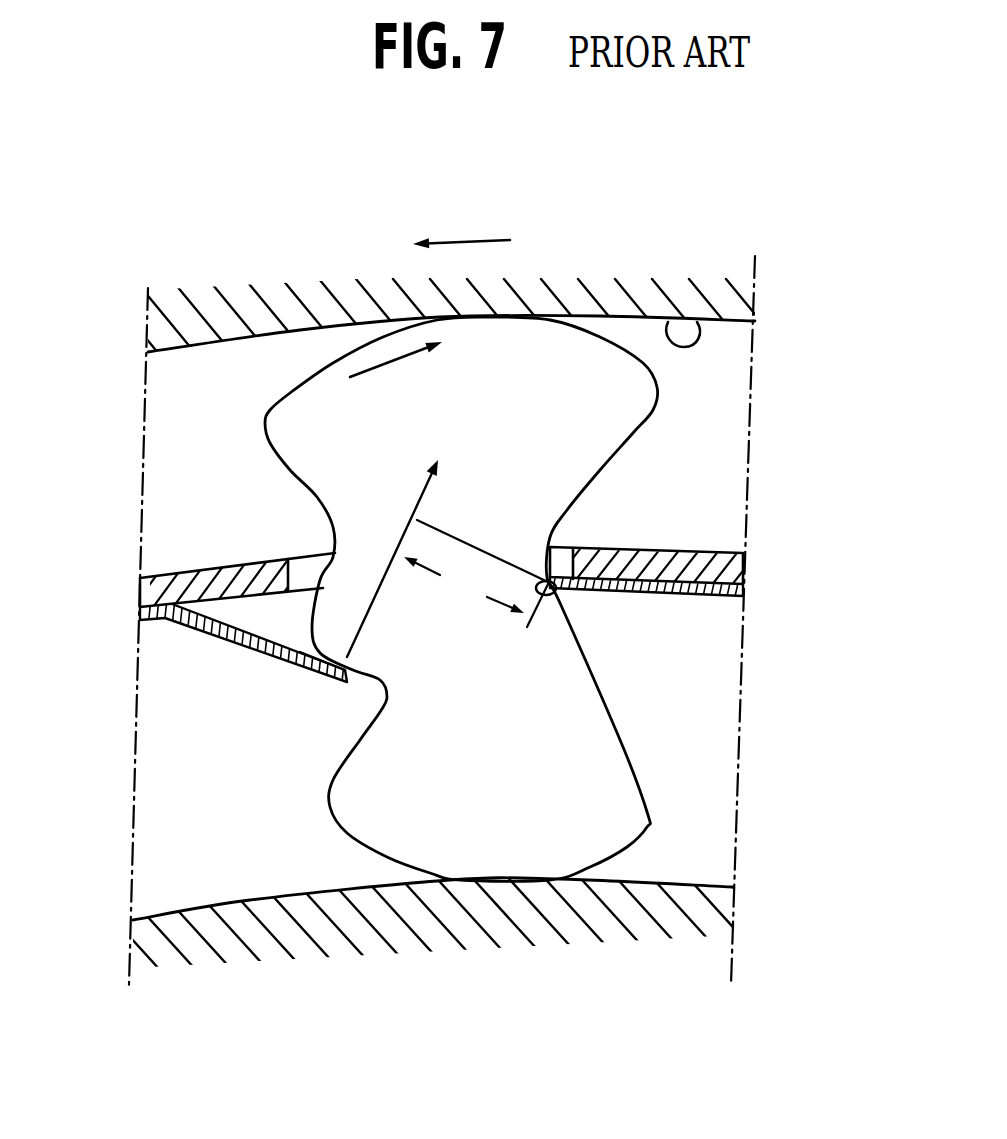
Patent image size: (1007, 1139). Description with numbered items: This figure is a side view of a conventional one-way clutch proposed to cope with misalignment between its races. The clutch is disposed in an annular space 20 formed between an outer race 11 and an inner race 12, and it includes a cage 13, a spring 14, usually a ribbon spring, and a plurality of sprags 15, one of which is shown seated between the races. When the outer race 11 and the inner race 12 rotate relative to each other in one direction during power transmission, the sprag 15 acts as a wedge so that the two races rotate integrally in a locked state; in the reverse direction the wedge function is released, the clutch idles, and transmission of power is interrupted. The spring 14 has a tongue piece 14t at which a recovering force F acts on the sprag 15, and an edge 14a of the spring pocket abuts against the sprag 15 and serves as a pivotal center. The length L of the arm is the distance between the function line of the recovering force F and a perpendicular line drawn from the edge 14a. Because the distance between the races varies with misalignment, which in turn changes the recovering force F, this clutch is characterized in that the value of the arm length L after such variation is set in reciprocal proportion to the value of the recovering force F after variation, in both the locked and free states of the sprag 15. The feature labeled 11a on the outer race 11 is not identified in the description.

The outer race 11 is at (577, 312).
The casing notch 11a is at (697, 322).
The inner race 12 is at (690, 903).
The cage 13 is at (703, 557).
The spring 14 is at (700, 597).
The edge 14a is at (542, 596).
The tongue piece 14t is at (270, 650).
The sprag 15 is at (637, 392).
The annular space 20 is at (170, 530).
The recovering force F is at (403, 552).
The length of an arm L is at (477, 573).